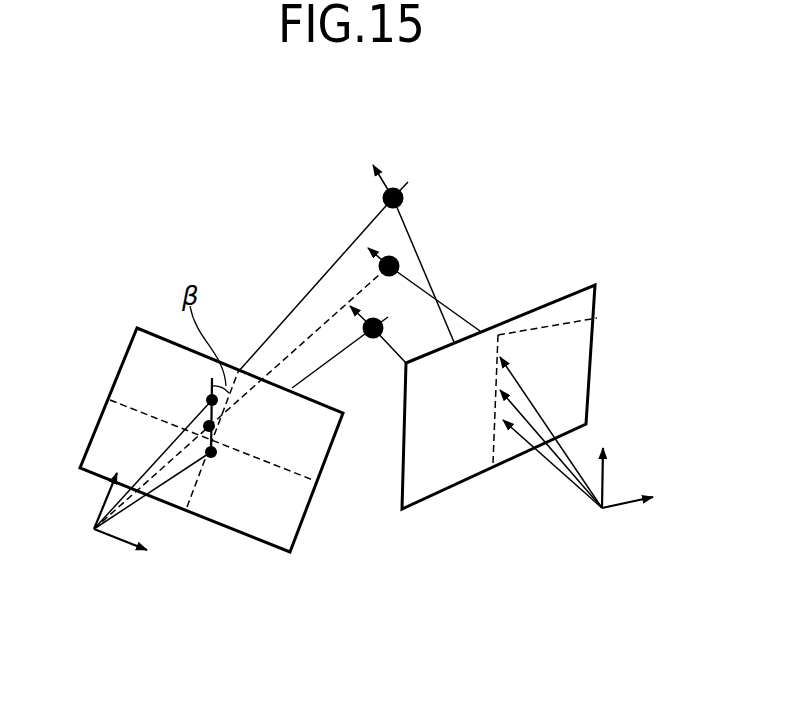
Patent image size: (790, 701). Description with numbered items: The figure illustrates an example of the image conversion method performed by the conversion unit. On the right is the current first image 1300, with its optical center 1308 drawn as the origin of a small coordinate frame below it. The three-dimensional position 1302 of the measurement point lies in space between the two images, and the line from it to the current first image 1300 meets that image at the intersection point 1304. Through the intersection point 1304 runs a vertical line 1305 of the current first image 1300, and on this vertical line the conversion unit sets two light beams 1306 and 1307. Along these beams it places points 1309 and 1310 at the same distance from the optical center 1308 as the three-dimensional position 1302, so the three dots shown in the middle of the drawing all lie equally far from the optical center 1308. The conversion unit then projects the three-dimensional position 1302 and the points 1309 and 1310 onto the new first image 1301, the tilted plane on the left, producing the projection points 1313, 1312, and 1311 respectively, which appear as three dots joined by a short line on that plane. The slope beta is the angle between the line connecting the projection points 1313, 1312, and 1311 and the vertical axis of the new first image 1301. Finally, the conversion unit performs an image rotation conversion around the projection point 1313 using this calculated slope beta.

The current first image 1300 is at (442, 482).
The new first image 1301 is at (272, 533).
The three-dimensional position 1302 is at (400, 263).
The intersection point 1304 is at (505, 385).
The vertical line 1305 is at (597, 318).
The light beam 1306 is at (373, 163).
The light beam 1307 is at (400, 349).
The optical center 1308 is at (602, 508).
The point 1309 is at (383, 198).
The point 1310 is at (372, 338).
The projection point 1311 is at (211, 458).
The projection point 1312 is at (211, 400).
The projection point 1313 is at (209, 426).